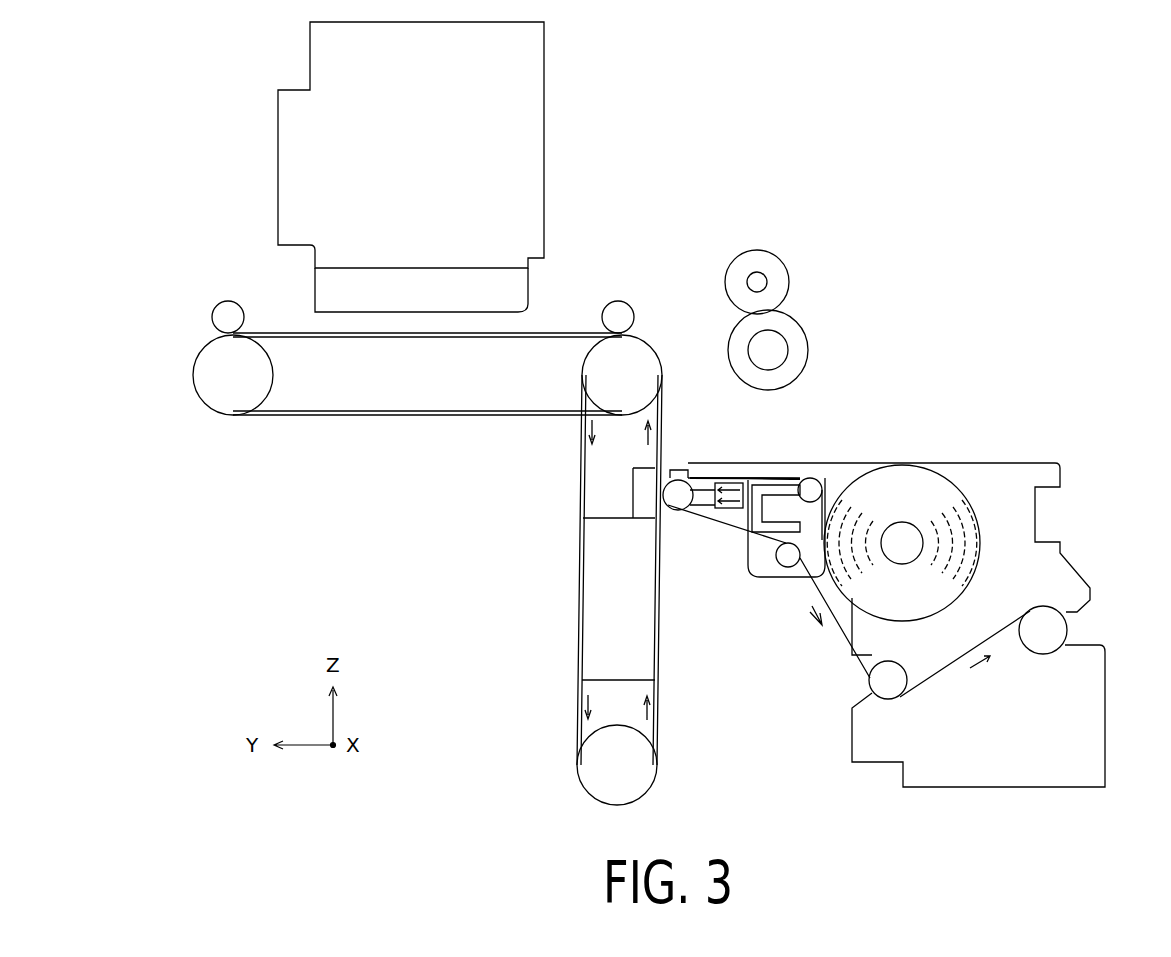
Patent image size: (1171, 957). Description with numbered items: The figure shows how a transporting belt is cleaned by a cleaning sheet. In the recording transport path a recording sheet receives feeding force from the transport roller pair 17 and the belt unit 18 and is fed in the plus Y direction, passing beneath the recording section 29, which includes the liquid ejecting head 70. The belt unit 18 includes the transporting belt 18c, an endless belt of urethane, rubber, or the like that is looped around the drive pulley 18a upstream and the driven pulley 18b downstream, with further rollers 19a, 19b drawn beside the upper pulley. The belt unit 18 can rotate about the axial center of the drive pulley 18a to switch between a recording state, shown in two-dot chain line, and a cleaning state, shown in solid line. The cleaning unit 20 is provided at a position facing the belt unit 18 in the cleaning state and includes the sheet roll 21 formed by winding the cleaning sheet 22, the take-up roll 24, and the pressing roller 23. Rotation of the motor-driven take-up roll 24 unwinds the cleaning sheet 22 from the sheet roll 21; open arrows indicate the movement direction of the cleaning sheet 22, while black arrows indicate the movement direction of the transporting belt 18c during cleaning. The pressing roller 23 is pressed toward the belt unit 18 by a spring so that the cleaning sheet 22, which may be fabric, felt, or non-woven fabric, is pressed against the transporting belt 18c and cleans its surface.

The transport roller pair 17 is at (767, 238).
The belt unit 18 is at (612, 570).
The drive pulley 18a is at (656, 362).
The driven pulley 18b is at (578, 763).
The transporting belt 18c is at (575, 550).
The roller 19a is at (621, 300).
The roller 19b is at (228, 300).
The cleaning unit 20 is at (903, 584).
The sheet roll 21 is at (903, 464).
The cleaning sheet 22 is at (698, 480).
The pressing roller 23 is at (676, 512).
The take-up roll 24 is at (1067, 630).
The recording section 29 is at (453, 167).
The liquid ejecting head 70 is at (483, 283).